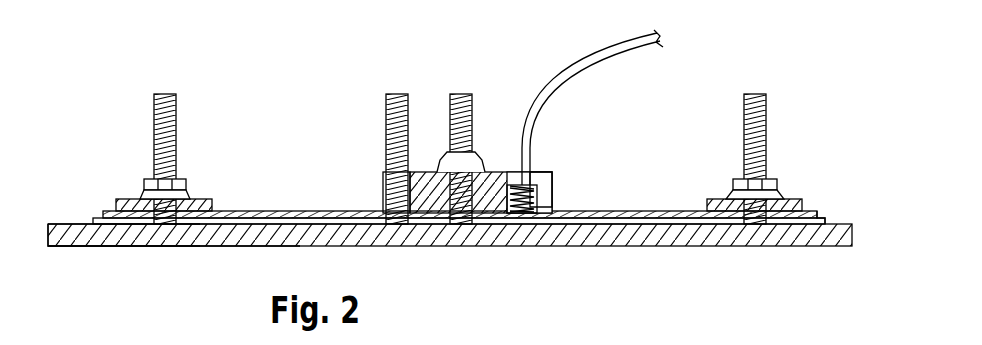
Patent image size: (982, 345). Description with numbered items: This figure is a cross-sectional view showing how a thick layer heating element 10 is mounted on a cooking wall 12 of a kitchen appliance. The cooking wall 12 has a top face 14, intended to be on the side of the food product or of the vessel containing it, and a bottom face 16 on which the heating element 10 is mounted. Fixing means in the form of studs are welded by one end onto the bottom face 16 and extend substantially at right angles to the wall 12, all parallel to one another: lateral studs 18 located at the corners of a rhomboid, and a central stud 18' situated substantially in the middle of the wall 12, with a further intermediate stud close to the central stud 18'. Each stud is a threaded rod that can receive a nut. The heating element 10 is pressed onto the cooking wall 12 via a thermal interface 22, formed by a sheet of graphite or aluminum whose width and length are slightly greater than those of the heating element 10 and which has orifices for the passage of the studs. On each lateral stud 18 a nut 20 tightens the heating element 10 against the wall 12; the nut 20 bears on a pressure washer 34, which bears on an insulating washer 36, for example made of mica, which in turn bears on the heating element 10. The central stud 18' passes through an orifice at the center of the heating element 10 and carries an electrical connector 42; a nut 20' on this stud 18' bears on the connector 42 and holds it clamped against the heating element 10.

The thick layer heating element 10 is at (315, 211).
The cooking wall 12 is at (77, 235).
The top face 14 is at (57, 247).
The bottom face 16 is at (58, 223).
The lateral stud 18 is at (465, 130).
The central stud 18' is at (479, 130).
The nut 20 is at (485, 156).
The nut 20' is at (452, 121).
The thermal interface 22 is at (683, 225).
The pressure washer 34 is at (717, 200).
The insulating washer 36 is at (808, 212).
The electrical connector 42 is at (506, 173).